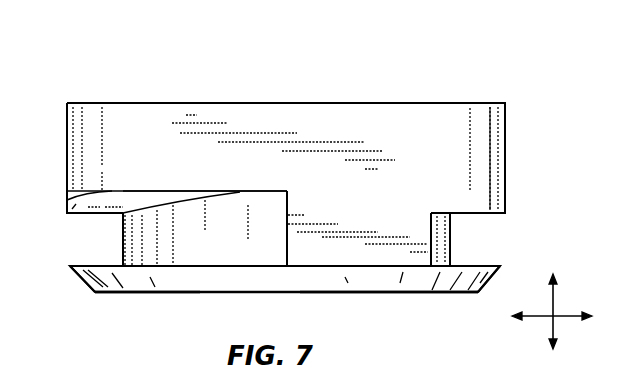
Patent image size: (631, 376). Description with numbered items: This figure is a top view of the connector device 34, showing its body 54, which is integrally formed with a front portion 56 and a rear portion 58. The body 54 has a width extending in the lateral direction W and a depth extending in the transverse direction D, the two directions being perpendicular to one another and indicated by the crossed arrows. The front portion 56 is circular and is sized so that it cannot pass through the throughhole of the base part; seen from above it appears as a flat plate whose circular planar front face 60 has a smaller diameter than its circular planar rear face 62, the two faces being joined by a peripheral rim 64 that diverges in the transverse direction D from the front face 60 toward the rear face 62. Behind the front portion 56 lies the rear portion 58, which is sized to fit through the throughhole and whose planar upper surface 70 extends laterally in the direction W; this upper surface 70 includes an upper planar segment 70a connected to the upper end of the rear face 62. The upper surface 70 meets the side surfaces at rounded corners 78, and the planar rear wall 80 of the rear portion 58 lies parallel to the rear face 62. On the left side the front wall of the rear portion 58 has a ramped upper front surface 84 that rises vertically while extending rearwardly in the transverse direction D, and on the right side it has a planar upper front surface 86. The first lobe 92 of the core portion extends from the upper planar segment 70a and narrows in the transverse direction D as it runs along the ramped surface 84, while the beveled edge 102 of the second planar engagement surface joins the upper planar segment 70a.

The connector device 34 is at (394, 80).
The body 54 is at (210, 294).
The front portion 56 is at (149, 294).
The rear portion 58 is at (512, 193).
The front face 60 is at (400, 294).
The rear face 62 is at (478, 266).
The peripheral rim 64 is at (88, 288).
The upper surface 70 is at (362, 118).
The upper planar segment 70a is at (372, 252).
The rounded corners 78 is at (76, 144).
The rear wall 80 is at (289, 103).
The ramped upper front surface 84 is at (68, 213).
The upper front surface 86 is at (487, 213).
The first lobe 92 is at (228, 214).
The beveled edge 102 is at (450, 240).
The transverse direction D is at (555, 303).
The lateral direction W is at (568, 318).